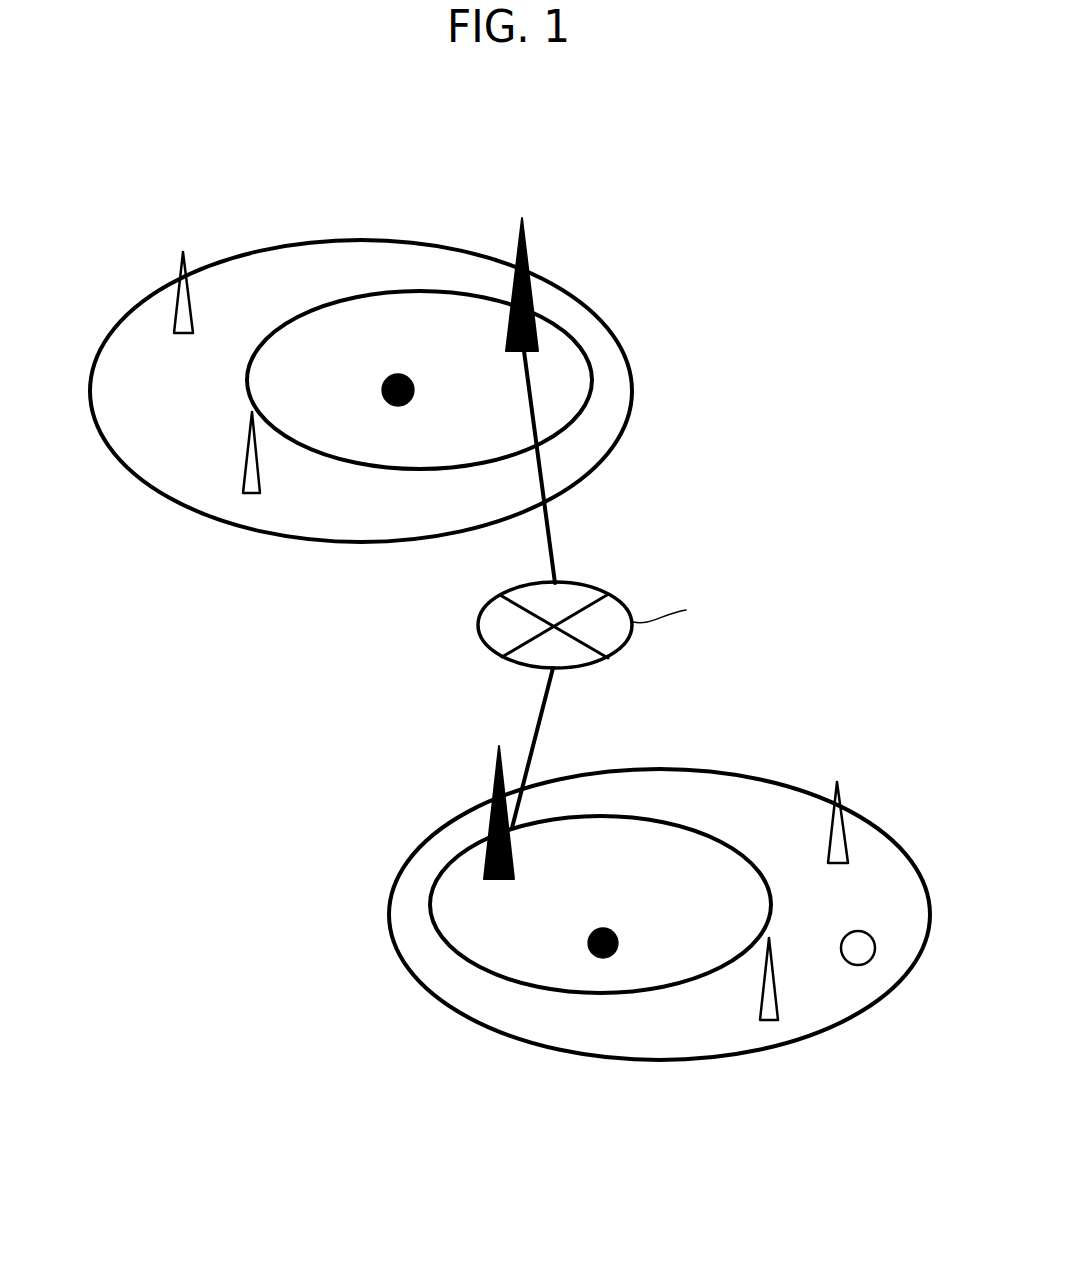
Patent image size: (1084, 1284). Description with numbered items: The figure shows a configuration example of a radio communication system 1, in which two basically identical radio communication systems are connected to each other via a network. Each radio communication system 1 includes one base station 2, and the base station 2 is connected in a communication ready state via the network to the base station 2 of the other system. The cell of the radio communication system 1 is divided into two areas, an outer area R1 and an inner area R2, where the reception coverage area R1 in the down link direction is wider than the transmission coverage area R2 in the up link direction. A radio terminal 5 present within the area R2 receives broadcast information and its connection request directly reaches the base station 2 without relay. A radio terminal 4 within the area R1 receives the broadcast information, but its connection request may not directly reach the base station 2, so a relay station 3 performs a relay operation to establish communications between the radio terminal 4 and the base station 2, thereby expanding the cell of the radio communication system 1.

The radio communication system 1 is at (245, 595).
The base station 2 is at (528, 258).
The relay station 3 is at (180, 272).
The radio terminal 4 is at (857, 965).
The radio terminal 5 is at (383, 387).
The area R1 is at (310, 242).
The area R2 is at (370, 461).